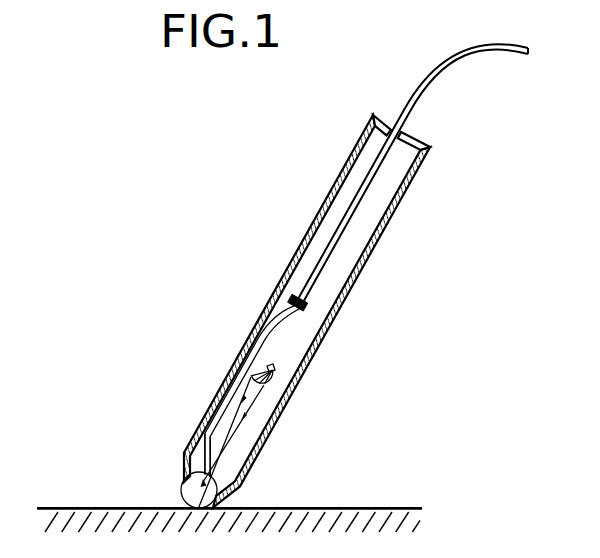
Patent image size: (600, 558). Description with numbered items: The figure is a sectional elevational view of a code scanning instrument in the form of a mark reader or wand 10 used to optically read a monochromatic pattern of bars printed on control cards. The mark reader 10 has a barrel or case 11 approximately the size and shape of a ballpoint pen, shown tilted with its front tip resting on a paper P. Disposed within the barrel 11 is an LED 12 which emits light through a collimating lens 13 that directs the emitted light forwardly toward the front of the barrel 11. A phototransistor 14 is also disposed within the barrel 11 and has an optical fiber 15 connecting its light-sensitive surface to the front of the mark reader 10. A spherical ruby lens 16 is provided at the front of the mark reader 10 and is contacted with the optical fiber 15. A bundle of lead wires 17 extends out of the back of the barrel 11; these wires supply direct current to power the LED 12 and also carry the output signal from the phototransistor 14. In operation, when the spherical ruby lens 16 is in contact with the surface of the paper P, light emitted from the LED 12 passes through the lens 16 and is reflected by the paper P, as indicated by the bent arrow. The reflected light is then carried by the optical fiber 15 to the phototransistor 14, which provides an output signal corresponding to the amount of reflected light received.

The mark reader 10 is at (334, 276).
The barrel 11 is at (242, 348).
The LED 12 is at (275, 369).
The collimating lens 13 is at (276, 379).
The phototransistor 14 is at (304, 309).
The optical fiber 15 is at (203, 432).
The spherical ruby lens 16 is at (188, 488).
The lead wires 17 is at (412, 109).
The paper P is at (386, 507).